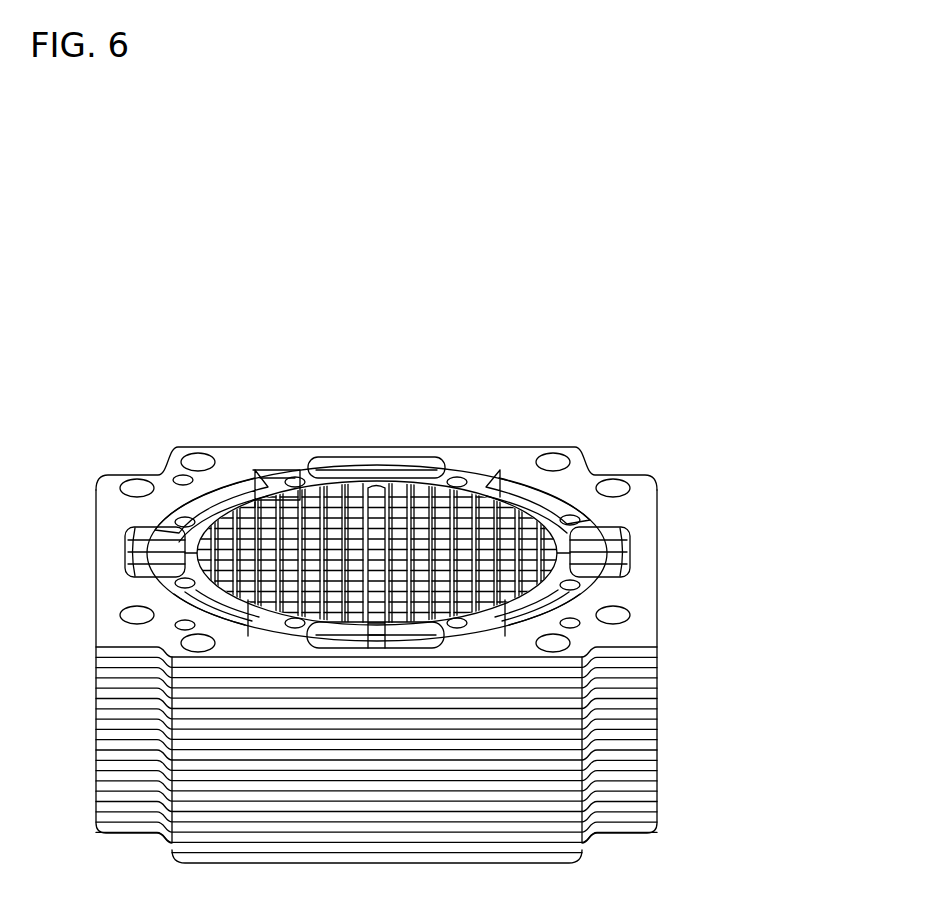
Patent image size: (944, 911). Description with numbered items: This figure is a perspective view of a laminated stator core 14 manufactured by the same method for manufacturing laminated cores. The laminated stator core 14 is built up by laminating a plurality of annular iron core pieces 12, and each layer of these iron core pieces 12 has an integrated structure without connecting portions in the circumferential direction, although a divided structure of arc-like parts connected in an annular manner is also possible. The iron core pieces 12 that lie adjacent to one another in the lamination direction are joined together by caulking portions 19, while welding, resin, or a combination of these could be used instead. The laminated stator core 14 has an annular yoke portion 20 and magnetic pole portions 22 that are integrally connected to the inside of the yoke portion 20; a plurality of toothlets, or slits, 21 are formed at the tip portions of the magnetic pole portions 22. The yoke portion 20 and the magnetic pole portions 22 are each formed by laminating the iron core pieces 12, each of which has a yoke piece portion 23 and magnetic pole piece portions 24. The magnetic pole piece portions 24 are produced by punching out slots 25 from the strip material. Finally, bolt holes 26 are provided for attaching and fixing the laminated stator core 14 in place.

The iron core piece 12 is at (645, 717).
The laminated stator core 14 is at (596, 361).
The caulking portion 19 is at (183, 478).
The yoke portion 20 is at (292, 437).
The toothlet 21 is at (413, 488).
The magnetic pole portion 22 is at (345, 478).
The yoke piece portion 23 is at (280, 478).
The magnetic pole piece portion 24 is at (262, 452).
The slot 25 is at (170, 510).
The bolt hole 26 is at (128, 490).